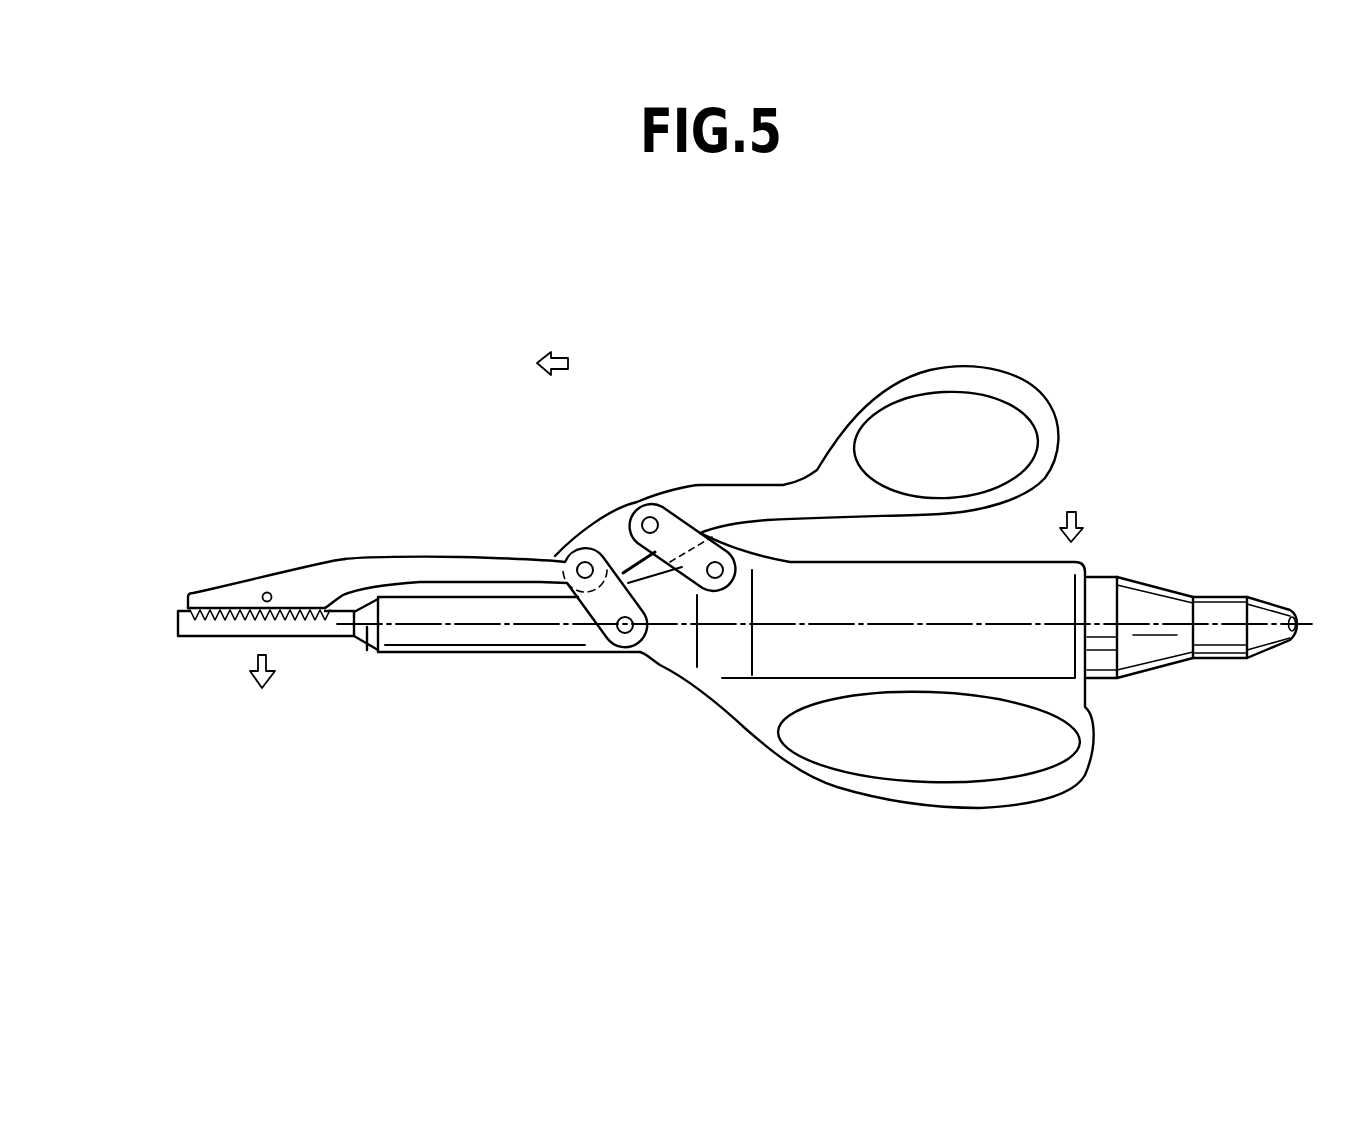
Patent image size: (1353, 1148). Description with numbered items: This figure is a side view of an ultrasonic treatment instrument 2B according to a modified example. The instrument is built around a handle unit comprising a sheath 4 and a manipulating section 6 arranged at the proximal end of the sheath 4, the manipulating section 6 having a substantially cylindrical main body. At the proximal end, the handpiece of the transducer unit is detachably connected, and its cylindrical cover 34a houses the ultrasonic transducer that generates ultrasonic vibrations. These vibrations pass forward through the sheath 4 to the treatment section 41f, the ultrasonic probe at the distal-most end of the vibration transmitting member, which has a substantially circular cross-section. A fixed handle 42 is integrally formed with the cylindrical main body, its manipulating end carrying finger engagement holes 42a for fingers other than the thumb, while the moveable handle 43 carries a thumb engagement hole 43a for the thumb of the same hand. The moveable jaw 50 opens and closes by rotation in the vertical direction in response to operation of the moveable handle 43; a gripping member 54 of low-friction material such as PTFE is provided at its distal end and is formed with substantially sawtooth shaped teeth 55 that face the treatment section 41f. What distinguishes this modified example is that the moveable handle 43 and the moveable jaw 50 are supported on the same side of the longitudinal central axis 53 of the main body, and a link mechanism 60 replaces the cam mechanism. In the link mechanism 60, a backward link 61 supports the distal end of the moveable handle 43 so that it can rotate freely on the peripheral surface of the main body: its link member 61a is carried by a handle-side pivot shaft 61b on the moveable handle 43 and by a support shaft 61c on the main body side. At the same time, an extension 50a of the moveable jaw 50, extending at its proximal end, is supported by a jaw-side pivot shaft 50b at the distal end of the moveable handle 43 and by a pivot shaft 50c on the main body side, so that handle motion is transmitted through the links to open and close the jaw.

The ultrasonic treatment instrument 2B is at (853, 337).
The sheath 4 is at (481, 645).
The manipulating section 6 is at (640, 787).
The cylindrical cover 34a is at (1158, 650).
The treatment section 41f is at (210, 633).
The fixed handle 42 is at (752, 718).
The finger engagement holes 42a is at (925, 765).
The moveable handle 43 is at (797, 488).
The thumb engagement hole 43a is at (952, 415).
The moveable jaw 50 is at (343, 578).
The extension 50a is at (550, 560).
The jaw-side pivot shaft 50b is at (585, 565).
The pivot shaft on the main body side 50c is at (625, 648).
The longitudinal central axis 53 is at (365, 650).
The gripping member 54 is at (238, 597).
The teeth 55 is at (178, 617).
The link mechanism 60 is at (533, 447).
The backward link 61 is at (778, 418).
The link member 61a is at (682, 510).
The handle-side pivot shaft 61b is at (648, 518).
The support shaft on the main body side 61c is at (717, 562).